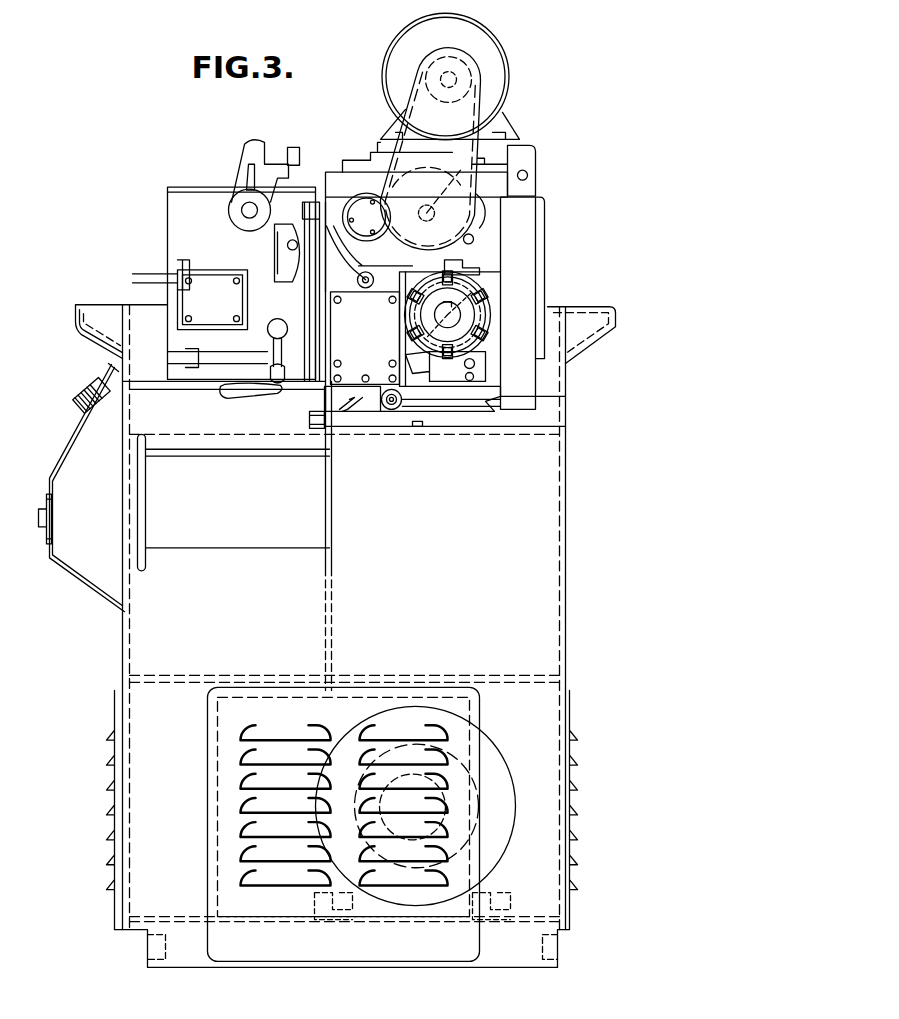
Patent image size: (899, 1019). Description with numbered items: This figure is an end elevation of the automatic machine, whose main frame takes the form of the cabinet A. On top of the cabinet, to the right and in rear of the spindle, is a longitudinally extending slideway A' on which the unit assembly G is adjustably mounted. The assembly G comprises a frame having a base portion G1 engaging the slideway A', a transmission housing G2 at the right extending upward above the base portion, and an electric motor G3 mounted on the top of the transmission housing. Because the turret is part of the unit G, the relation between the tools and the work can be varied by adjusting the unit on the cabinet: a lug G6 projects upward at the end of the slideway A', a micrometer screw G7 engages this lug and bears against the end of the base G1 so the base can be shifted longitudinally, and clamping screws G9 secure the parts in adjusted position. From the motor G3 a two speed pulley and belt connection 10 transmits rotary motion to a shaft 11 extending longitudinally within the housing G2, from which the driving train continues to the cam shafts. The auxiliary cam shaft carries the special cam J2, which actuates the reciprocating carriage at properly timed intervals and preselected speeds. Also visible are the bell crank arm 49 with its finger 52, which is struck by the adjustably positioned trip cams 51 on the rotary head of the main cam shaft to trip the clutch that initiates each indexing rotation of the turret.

The cabinet A is at (308, 636).
The slideway A' is at (553, 363).
The two speed pulley and belt connection 10 is at (393, 107).
The shaft 11 is at (458, 168).
The bell crank arm 49 is at (418, 270).
The trip cams 51 is at (487, 300).
The finger 52 is at (460, 280).
The assembly G is at (554, 272).
The base portion G1 is at (455, 402).
The transmission housing G2 is at (527, 237).
The electric motor G3 is at (507, 80).
The lug G6 is at (373, 412).
The micrometer screw G7 is at (399, 397).
The clamping screws G9 is at (307, 427).
The special cam J2 is at (310, 358).